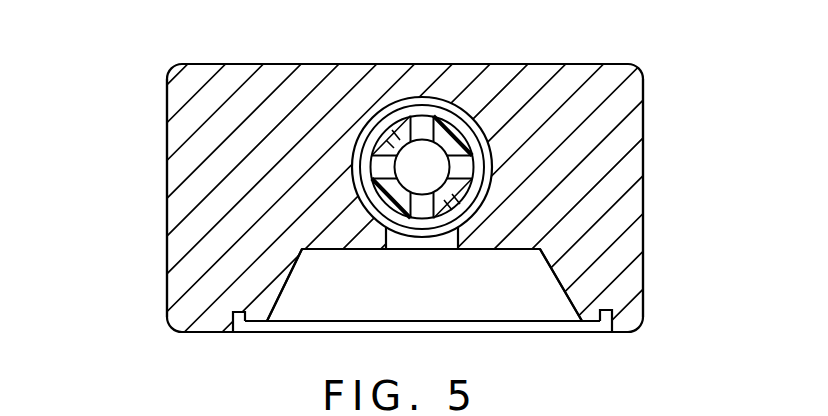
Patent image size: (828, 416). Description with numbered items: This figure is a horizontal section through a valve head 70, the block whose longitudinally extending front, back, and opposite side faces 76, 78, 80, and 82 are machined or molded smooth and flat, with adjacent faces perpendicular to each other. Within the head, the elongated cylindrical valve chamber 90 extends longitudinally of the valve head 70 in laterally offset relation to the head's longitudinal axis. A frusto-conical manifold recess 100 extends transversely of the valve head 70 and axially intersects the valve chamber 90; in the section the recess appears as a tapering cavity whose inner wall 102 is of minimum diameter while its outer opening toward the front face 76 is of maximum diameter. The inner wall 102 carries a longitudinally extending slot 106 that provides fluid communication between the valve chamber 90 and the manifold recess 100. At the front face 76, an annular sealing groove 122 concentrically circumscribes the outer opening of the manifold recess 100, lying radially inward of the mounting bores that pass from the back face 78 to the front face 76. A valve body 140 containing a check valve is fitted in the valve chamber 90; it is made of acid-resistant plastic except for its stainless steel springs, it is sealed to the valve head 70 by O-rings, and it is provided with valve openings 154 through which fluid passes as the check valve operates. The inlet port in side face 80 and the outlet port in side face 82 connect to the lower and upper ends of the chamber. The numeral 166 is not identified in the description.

The valve head 70 is at (175, 333).
The front face 76 is at (220, 333).
The back face 78 is at (242, 64).
The side face 80 is at (643, 165).
The side face 82 is at (168, 222).
The valve chamber 90 is at (373, 146).
The manifold recess 100 is at (470, 304).
The inner wall 102 is at (483, 250).
The slot 106 is at (400, 250).
The annular sealing groove 122 is at (605, 333).
The valve body 140 is at (462, 127).
The valve openings 154 is at (422, 124).
The element of adjacent figure 166 is at (205, 408).